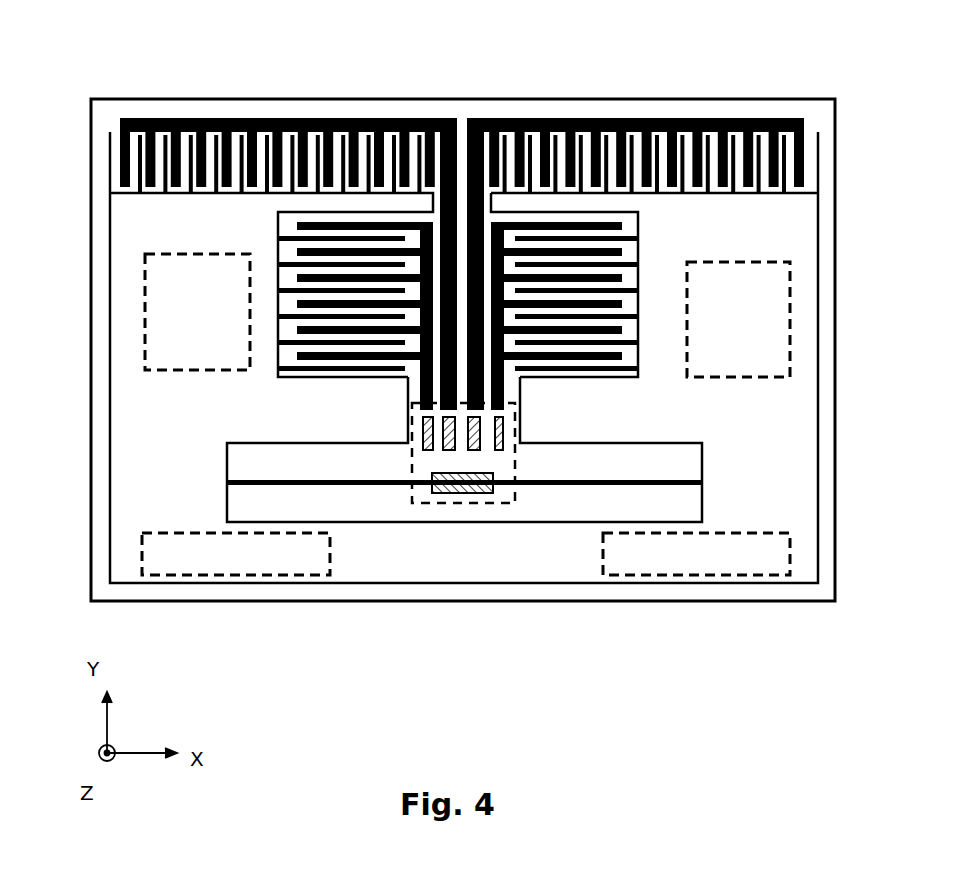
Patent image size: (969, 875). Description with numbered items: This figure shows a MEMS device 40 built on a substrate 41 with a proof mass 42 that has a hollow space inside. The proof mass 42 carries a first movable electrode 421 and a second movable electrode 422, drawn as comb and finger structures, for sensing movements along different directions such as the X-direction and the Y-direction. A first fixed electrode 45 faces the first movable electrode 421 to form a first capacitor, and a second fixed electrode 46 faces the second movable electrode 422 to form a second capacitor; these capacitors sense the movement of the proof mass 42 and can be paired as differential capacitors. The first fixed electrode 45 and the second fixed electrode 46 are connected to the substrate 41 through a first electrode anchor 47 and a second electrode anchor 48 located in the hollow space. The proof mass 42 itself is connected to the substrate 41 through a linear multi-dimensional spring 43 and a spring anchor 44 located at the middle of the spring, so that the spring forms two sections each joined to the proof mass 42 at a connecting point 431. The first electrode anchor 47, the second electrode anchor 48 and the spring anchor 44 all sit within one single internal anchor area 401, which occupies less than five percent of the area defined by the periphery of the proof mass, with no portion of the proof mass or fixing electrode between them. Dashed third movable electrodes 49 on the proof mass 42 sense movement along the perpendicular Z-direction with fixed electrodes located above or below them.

The MEMS device 40 is at (75, 76).
The substrate 41 is at (252, 100).
The proof mass 42 is at (163, 472).
The first movable electrode 421 is at (188, 180).
The second movable electrode 422 is at (313, 368).
The multi-dimensional spring 43 is at (352, 484).
The connecting point 431 is at (228, 484).
The spring anchor 44 is at (472, 452).
The first fixed electrode 45 is at (412, 118).
The second fixed electrode 46 is at (418, 362).
The first electrode anchor 47 is at (457, 452).
The second electrode anchor 48 is at (425, 452).
The third movable electrode 49 is at (145, 298).
The internal anchor area 401 is at (515, 504).